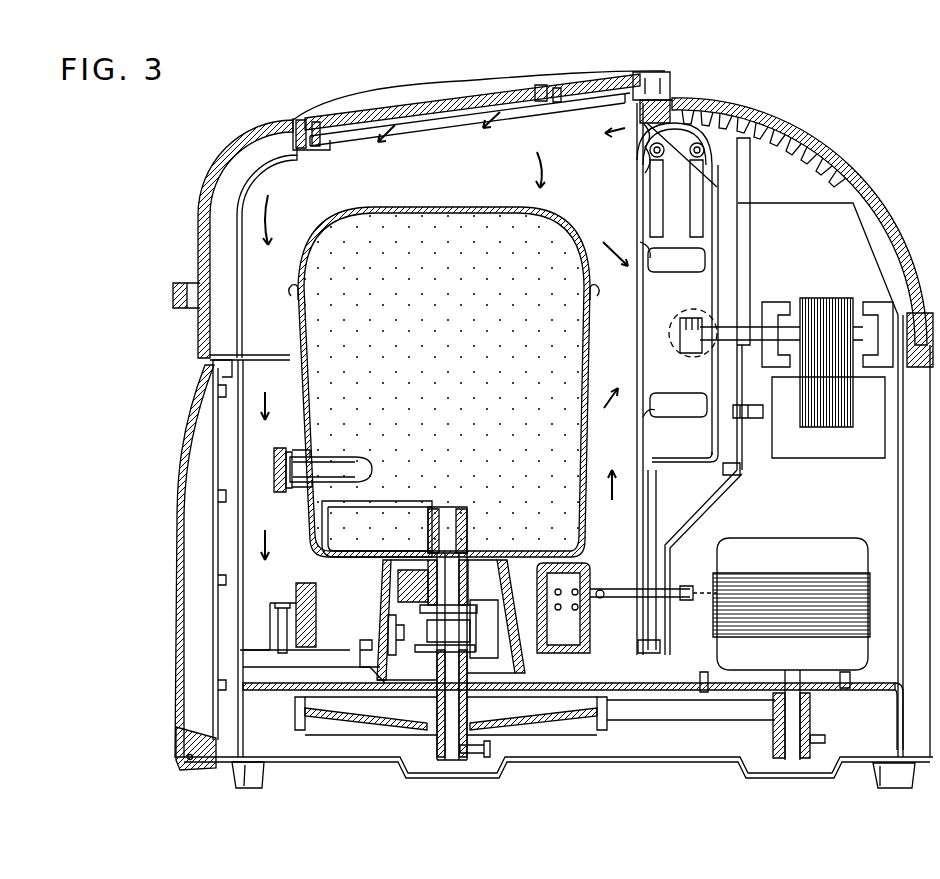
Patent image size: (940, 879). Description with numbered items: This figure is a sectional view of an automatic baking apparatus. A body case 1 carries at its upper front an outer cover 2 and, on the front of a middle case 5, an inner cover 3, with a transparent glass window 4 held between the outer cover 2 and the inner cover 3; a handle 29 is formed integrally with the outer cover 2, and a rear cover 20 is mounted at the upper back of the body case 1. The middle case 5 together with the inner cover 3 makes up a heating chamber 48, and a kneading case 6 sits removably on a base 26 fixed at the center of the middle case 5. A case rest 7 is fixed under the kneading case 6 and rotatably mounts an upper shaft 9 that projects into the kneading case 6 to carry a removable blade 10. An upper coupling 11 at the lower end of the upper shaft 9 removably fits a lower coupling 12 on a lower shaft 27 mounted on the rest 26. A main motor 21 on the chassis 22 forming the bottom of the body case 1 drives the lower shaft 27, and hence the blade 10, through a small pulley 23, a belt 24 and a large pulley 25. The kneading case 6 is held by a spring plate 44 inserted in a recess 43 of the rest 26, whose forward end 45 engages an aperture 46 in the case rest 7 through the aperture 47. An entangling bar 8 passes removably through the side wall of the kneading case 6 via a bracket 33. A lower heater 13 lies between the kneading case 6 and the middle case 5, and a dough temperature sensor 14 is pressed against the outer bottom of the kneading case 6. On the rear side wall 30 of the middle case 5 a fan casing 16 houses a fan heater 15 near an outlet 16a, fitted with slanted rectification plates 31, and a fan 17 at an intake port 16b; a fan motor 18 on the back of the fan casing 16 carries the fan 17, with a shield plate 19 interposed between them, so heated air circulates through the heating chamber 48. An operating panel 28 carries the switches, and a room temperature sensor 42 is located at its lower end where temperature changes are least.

The body case 1 is at (208, 462).
The outer cover 2 is at (287, 124).
The inner cover 3 is at (237, 222).
The transparent glass window 4 is at (440, 104).
The middle case 5 is at (212, 548).
The kneading case 6 is at (300, 321).
The case rest 7 is at (530, 565).
The entangling bar 8 is at (340, 458).
The upper shaft 9 is at (445, 507).
The blade 10 is at (397, 506).
The upper coupling 11 is at (470, 590).
The lower coupling 12 is at (491, 631).
The lower heater 13 is at (300, 597).
The dough temperature sensor 14 is at (560, 565).
The fan heater 15 is at (700, 200).
The fan casing 16 is at (720, 242).
The outlet 16a is at (640, 158).
The intake port 16b is at (642, 333).
The fan 17 is at (650, 248).
The fan motor 18 is at (855, 397).
The shield plate 19 is at (750, 272).
The rear cover 20 is at (777, 124).
The main motor 21 is at (866, 552).
The chassis 22 is at (270, 691).
The small pulley 23 is at (773, 745).
The belt 24 is at (716, 721).
The large pulley 25 is at (451, 726).
The base (rest) 26 is at (380, 657).
The lower shaft 27 is at (445, 760).
The operating panel 28 is at (176, 697).
The handle 29 is at (173, 295).
The side wall 30 is at (648, 530).
The rectification plate 31 is at (668, 115).
The bracket 33 is at (304, 493).
The room temperature sensor 42 is at (189, 762).
The recess 43 is at (411, 590).
The spring plate 44 is at (435, 648).
The forward end of spring plate 45 is at (360, 642).
The aperture 46 is at (382, 630).
The aperture 47 is at (382, 585).
The heating chamber 48 is at (258, 207).